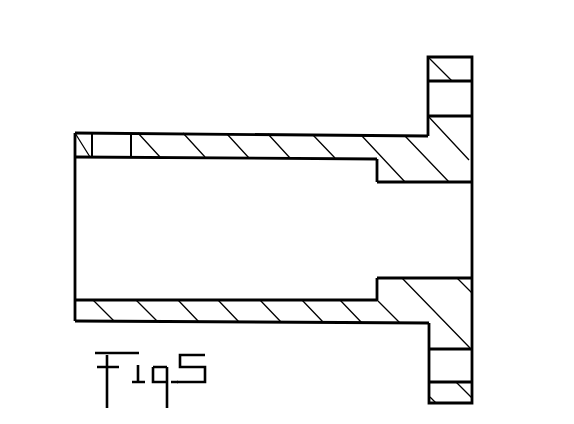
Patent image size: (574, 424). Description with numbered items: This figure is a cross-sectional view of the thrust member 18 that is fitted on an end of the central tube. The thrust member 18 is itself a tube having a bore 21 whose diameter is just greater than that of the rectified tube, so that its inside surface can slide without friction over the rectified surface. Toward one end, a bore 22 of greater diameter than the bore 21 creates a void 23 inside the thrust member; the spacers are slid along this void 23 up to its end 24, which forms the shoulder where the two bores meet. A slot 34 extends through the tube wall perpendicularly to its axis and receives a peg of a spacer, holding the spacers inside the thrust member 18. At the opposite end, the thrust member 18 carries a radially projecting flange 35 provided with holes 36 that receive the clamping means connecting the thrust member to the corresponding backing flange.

The thrust member 18 is at (458, 278).
The bore 21 is at (452, 207).
The bore of greater diameter 22 is at (85, 187).
The void 23 is at (270, 168).
The end 24 is at (377, 290).
The slot 34 is at (109, 143).
The flange 35 is at (473, 64).
The holes 36 is at (463, 100).